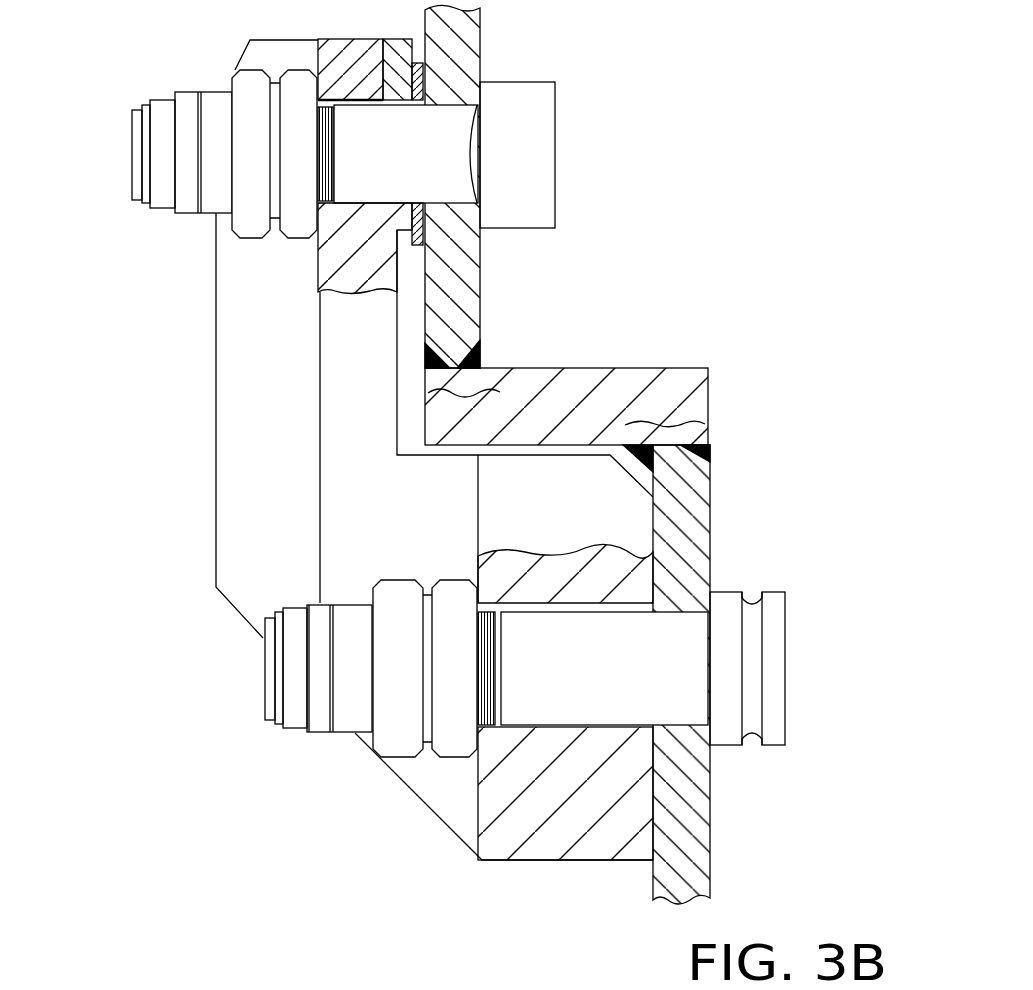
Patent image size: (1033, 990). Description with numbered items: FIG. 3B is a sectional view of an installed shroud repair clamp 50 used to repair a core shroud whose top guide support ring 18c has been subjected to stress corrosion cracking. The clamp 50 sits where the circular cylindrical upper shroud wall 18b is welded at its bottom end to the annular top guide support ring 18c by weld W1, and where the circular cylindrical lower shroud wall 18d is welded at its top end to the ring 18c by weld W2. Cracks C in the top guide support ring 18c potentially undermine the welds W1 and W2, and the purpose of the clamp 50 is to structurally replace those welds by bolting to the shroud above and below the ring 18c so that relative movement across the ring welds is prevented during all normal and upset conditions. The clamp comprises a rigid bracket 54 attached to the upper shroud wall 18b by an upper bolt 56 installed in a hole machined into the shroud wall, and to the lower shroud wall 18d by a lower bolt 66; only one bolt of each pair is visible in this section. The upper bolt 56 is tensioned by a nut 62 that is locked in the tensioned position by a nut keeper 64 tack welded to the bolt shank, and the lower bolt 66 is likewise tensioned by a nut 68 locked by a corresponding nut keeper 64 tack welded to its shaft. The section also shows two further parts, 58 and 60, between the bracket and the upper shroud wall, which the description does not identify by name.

The shroud repair clamp 50 is at (178, 438).
The rigid bracket 54 is at (225, 500).
The upper bolt 56 is at (537, 113).
The spacer block 58 is at (403, 53).
The sleeve 60 is at (418, 80).
The nut 62 is at (245, 80).
The nut keeper 64 is at (182, 92).
The lower bolt 66 is at (773, 637).
The nut 68 is at (395, 747).
The upper shroud wall 18b is at (460, 296).
The top guide support ring 18c is at (640, 380).
The lower shroud wall 18d is at (688, 810).
The weld W1 is at (488, 345).
The weld W2 is at (712, 453).
The cracks C is at (488, 392).